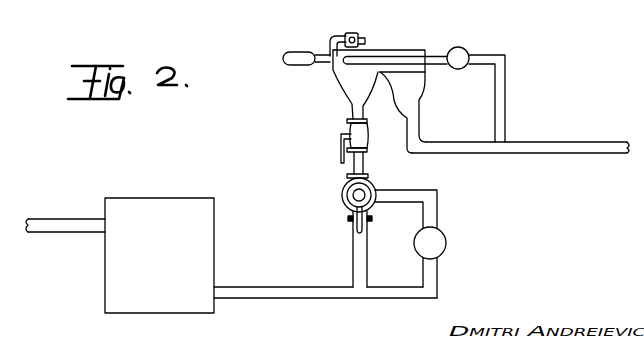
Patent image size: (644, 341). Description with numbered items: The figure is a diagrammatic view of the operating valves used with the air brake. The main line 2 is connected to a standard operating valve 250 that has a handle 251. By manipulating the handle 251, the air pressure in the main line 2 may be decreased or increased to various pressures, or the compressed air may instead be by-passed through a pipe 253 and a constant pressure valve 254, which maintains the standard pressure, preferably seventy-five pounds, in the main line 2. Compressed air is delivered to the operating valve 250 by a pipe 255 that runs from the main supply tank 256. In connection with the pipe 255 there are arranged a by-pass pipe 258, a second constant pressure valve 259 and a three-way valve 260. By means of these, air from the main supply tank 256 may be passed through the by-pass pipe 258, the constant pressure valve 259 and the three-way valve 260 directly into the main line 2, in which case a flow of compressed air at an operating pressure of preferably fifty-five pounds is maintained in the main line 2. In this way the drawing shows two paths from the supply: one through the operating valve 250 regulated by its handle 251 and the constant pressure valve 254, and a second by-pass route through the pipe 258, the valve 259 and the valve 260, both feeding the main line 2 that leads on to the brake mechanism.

The main line 2 is at (598, 147).
The operating valve 250 is at (398, 50).
The handle 251 is at (312, 65).
The pipe 253 is at (506, 98).
The constant pressure valve 254 is at (464, 48).
The pipe 255 is at (354, 251).
The main supply tank 256 is at (163, 205).
The by-pass pipe 258 is at (440, 275).
The constant pressure valve 259 is at (446, 238).
The three-way valve 260 is at (342, 190).